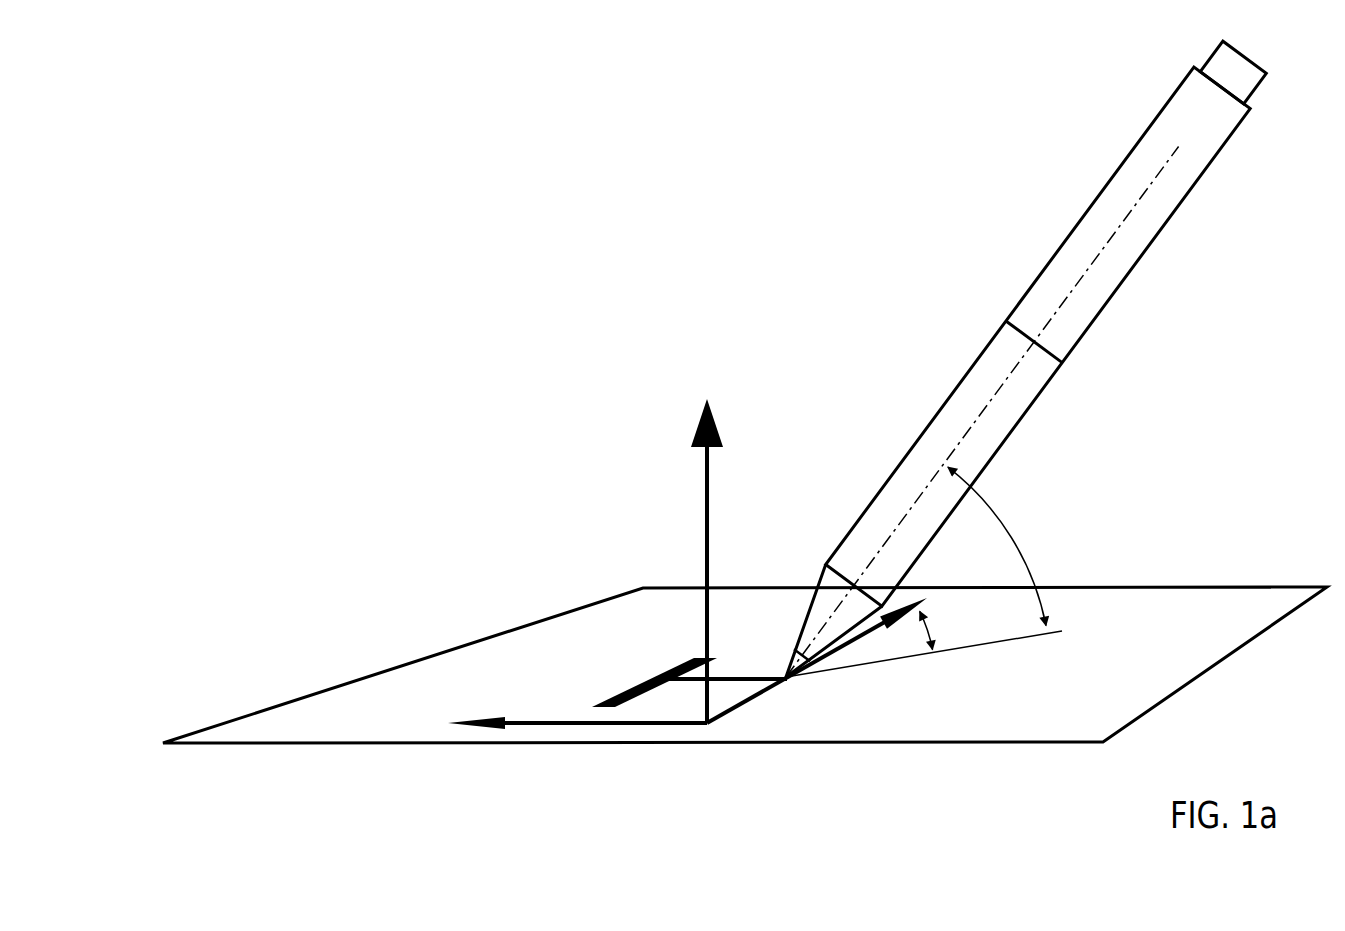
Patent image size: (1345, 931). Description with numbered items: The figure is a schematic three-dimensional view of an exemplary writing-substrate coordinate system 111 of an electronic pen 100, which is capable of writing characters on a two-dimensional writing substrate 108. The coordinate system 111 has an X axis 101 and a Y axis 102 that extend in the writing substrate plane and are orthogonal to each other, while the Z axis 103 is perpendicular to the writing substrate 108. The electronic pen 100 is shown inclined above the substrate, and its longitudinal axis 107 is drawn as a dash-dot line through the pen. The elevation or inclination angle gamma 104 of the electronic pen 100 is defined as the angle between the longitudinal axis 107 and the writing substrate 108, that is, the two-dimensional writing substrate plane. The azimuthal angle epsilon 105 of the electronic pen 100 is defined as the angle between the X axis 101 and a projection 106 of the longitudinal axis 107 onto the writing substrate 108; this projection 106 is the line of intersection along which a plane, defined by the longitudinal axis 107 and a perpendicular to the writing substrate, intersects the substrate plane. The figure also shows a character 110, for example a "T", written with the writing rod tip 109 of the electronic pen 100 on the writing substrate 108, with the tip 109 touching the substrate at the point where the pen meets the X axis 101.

The electronic pen 100 is at (1143, 136).
The X axis 101 is at (750, 698).
The Y axis 102 is at (573, 726).
The Z axis 103 is at (709, 505).
The elevation angle γ 104 is at (1050, 524).
The azimuthal angle ε 105 is at (965, 635).
The projection of the longitudinal axis 106 is at (900, 660).
The longitudinal axis 107 is at (1085, 273).
The writing substrate 108 is at (1251, 598).
The writing rod tip 109 is at (787, 677).
The character 110 is at (650, 682).
The writing-substrate coordinate system 111 is at (709, 726).